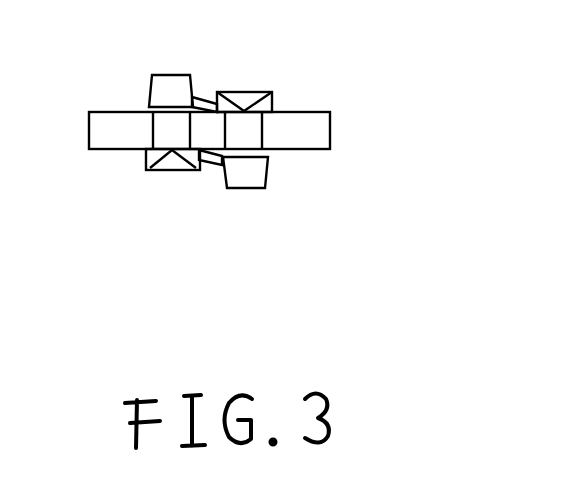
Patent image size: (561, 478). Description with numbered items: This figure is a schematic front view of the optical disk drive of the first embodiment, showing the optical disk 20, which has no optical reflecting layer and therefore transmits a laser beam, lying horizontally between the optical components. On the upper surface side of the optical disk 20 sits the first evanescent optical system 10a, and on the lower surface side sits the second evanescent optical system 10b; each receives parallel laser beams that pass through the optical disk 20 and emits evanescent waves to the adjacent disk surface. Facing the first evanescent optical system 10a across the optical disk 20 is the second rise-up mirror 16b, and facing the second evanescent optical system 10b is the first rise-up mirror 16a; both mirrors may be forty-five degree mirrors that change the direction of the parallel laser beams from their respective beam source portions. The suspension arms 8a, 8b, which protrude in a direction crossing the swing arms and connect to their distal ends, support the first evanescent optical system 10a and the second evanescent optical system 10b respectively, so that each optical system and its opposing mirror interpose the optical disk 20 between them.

The optical disk 20 is at (333, 127).
The second rise-up mirror 16b is at (173, 85).
The first rise-up mirror 16a is at (248, 175).
The first evanescent optical system 10a is at (247, 91).
The second evanescent optical system 10b is at (170, 172).
The suspension arm 8a is at (204, 97).
The suspension arm 8b is at (213, 162).